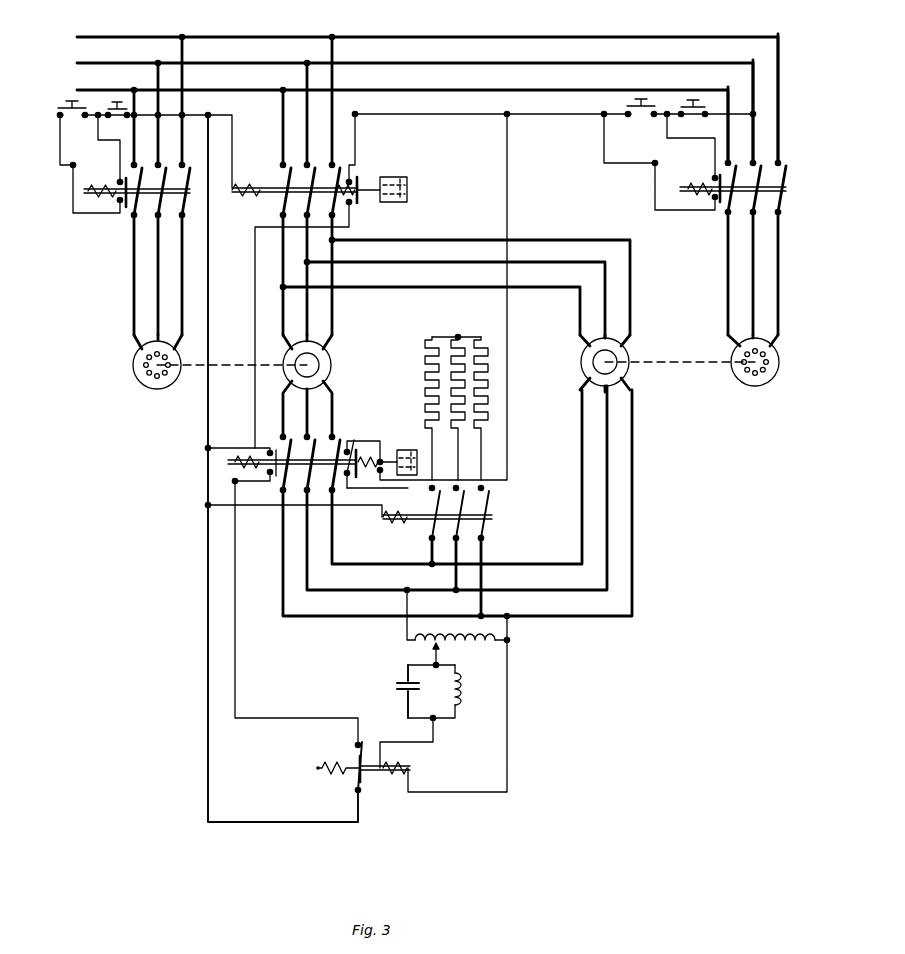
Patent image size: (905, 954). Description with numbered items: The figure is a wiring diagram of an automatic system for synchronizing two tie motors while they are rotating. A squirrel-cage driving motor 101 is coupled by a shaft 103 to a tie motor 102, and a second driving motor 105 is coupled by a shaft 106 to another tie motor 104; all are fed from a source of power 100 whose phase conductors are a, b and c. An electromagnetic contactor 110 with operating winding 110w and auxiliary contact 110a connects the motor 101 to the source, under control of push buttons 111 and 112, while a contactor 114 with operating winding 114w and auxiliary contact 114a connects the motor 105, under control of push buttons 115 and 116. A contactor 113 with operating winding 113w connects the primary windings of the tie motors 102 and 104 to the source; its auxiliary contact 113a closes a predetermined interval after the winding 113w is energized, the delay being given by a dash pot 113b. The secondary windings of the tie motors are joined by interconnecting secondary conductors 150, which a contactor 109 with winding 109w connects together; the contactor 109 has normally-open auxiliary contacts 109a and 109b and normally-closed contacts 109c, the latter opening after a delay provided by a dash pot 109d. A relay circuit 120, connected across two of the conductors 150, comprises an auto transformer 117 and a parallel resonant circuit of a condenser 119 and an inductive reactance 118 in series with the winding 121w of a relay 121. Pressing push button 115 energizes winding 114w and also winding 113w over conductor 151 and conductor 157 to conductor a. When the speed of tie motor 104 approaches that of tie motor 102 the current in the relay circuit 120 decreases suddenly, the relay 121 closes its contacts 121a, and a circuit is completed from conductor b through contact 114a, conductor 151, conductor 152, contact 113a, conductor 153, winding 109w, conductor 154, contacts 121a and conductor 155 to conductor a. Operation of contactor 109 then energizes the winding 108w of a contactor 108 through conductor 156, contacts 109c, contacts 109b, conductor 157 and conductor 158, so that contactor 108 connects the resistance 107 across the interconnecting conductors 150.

The source of power 100 is at (64, 71).
The conductor a is at (135, 39).
The conductor b is at (138, 65).
The conductor c is at (108, 95).
The driving motor 101 is at (132, 373).
The tie motor 102 is at (331, 366).
The shaft 103 is at (239, 360).
The tie motor 104 is at (580, 364).
The second driving motor 105 is at (756, 386).
The shaft 106 is at (688, 358).
The resistance 107 is at (424, 392).
The electromagnetic contactor 108 is at (406, 521).
The operating winding 108w is at (389, 522).
The electromagnetic contactor 109 is at (261, 479).
The operating winding 109w is at (240, 445).
The normally-opened auxiliary contact 109a is at (270, 449).
The normally-opened auxiliary contact 109b is at (355, 440).
The normally-closed auxiliary contacts 109c is at (381, 451).
The dash pot 109d is at (418, 470).
The electromagnetic contactor 110 is at (104, 201).
The operating winding 110w is at (98, 182).
The auxiliary contact 110a is at (124, 206).
The push button 111 is at (72, 101).
The push button 112 is at (115, 105).
The electromagnetic contactor 113 is at (274, 193).
The operating winding 113w is at (250, 199).
The auxiliary contact 113a is at (360, 178).
The dash pot 113b is at (404, 196).
The electromagnetic contactor 114 is at (701, 194).
The operating winding 114w is at (699, 174).
The auxiliary contact 114a is at (718, 202).
The push button 115 is at (641, 100).
The push button 116 is at (692, 100).
The auto transformer 117 is at (457, 646).
The inductive reactance 118 is at (460, 684).
The condenser 119 is at (397, 683).
The relay circuit 120 is at (467, 772).
The relay 121 is at (374, 759).
The contacts 121a is at (363, 740).
The winding 121w is at (389, 768).
The interconnecting secondary conductors 150 is at (546, 616).
The conductor 151 is at (550, 113).
The conductor 152 is at (357, 135).
The conductor 153 is at (353, 229).
The conductor 154 is at (236, 593).
The conductor 155 is at (205, 474).
The conductor 156 is at (507, 211).
The conductor 157 is at (235, 124).
The conductor 158 is at (254, 509).